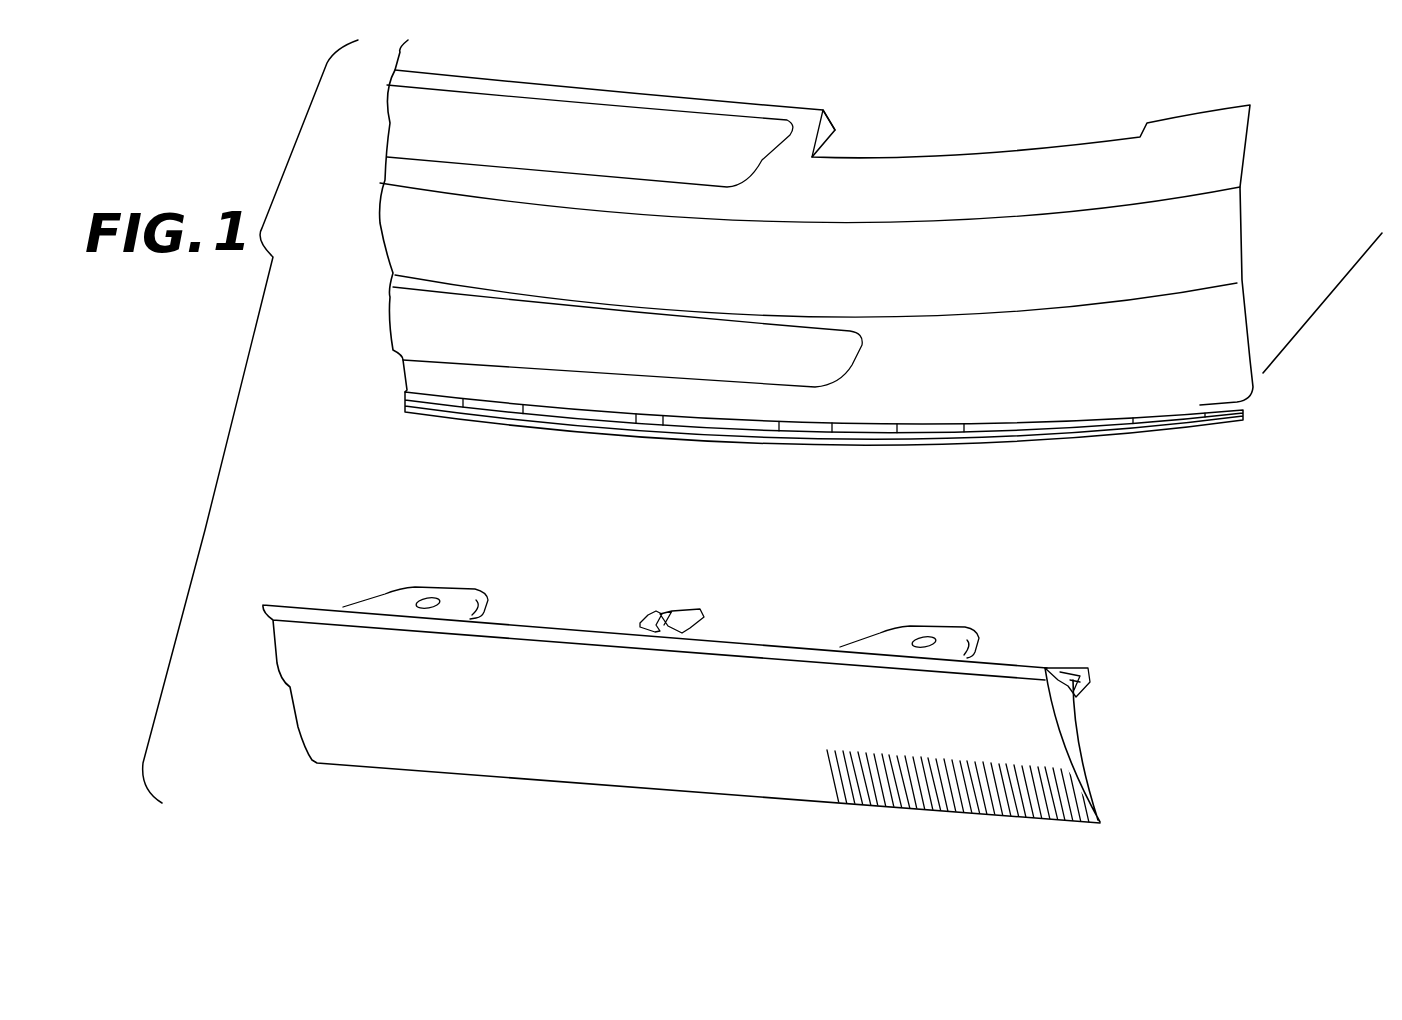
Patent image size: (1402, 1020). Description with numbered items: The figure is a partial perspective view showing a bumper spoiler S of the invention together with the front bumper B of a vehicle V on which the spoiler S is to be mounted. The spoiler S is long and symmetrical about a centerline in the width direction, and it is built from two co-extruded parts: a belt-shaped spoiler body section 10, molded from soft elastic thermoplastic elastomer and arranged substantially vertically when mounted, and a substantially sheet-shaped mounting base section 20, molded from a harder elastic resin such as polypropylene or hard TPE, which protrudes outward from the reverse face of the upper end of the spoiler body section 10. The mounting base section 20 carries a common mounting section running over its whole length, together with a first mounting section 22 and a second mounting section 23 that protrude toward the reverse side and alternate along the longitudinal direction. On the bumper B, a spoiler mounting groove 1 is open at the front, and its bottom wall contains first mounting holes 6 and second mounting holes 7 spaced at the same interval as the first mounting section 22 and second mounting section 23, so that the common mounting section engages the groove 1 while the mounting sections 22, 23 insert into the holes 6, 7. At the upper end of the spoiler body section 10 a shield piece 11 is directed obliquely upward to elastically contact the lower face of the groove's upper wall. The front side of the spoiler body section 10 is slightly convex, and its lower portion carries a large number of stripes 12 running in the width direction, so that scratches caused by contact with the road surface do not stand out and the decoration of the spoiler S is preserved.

The front bumper B is at (1006, 137).
The spoiler mounting groove 1 is at (824, 460).
The first mounting hole 6 is at (647, 418).
The second mounting hole 7 is at (802, 430).
The vehicle V is at (1347, 275).
The bumper spoiler S is at (797, 630).
The spoiler body section 10 is at (480, 760).
The shield piece 11 is at (1022, 661).
The stripes 12 is at (847, 770).
The mounting base section 20 is at (1090, 669).
The first mounting section 22 is at (647, 617).
The second mounting section 23 is at (445, 592).